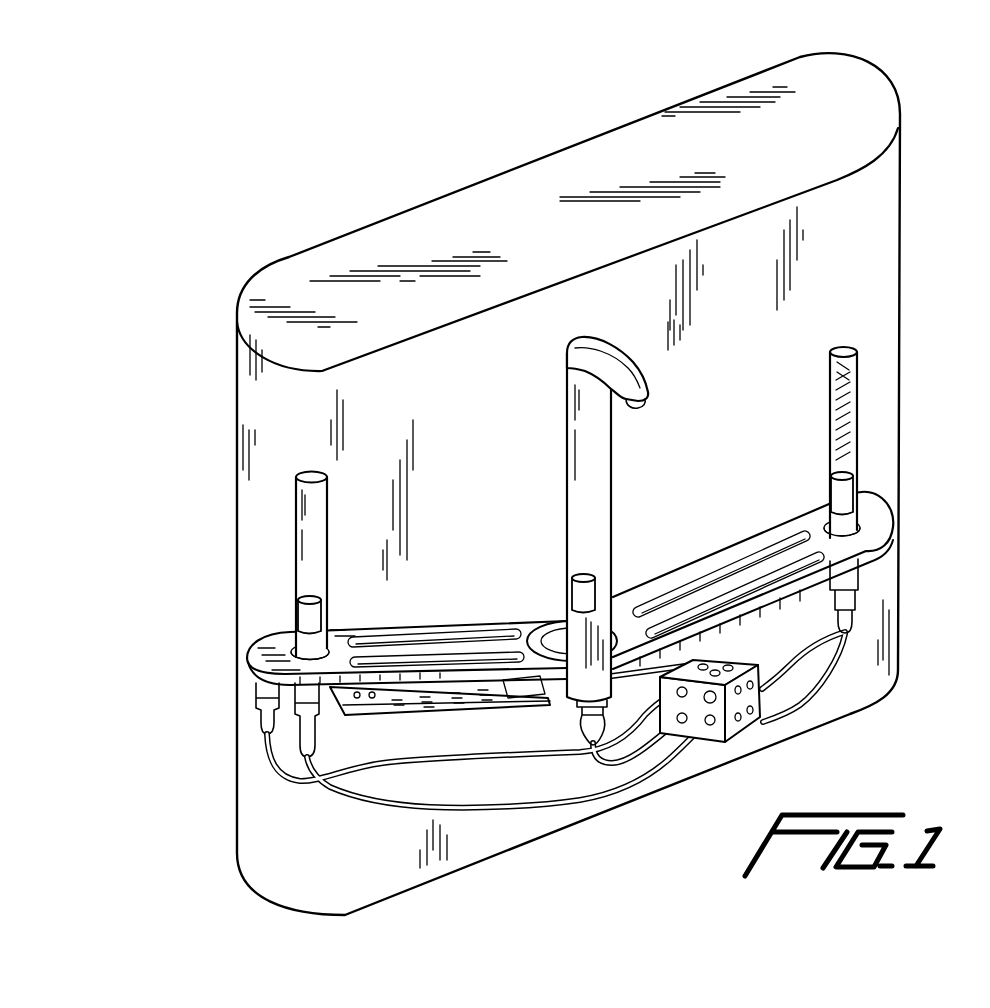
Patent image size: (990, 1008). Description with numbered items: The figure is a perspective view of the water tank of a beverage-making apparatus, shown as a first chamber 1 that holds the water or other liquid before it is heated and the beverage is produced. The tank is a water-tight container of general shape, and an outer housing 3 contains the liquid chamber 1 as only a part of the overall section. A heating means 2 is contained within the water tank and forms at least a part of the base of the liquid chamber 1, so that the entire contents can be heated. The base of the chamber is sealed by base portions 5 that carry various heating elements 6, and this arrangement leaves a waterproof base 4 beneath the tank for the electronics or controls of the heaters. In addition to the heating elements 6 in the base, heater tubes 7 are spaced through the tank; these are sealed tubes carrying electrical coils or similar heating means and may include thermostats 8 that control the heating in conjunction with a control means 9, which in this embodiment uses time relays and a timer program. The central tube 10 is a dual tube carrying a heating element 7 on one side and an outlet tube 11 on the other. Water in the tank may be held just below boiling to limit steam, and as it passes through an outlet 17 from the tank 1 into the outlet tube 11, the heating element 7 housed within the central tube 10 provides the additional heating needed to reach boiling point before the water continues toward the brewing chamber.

The first chamber 1 is at (417, 243).
The heating means 2 is at (832, 550).
The outer housing 3 is at (899, 203).
The waterproof base 4 is at (880, 673).
The base portions 5 is at (268, 653).
The heating elements 6 is at (778, 576).
The heater tubes 7 is at (313, 500).
The thermostats 8 is at (312, 613).
The control means 9 is at (426, 700).
The central tube 10 is at (577, 388).
The outlet tube 11 is at (570, 467).
The outlet 17 is at (563, 635).